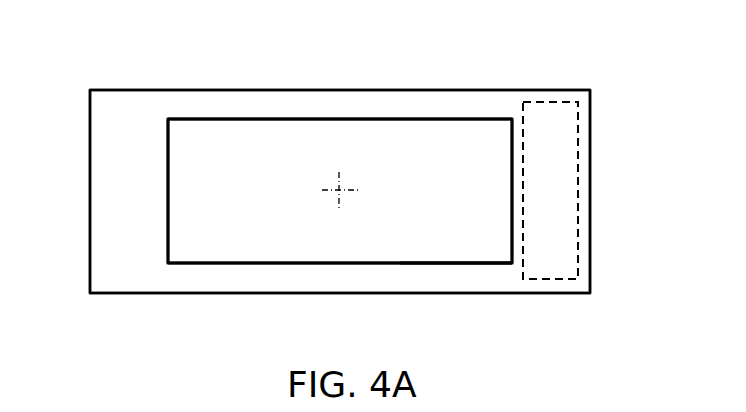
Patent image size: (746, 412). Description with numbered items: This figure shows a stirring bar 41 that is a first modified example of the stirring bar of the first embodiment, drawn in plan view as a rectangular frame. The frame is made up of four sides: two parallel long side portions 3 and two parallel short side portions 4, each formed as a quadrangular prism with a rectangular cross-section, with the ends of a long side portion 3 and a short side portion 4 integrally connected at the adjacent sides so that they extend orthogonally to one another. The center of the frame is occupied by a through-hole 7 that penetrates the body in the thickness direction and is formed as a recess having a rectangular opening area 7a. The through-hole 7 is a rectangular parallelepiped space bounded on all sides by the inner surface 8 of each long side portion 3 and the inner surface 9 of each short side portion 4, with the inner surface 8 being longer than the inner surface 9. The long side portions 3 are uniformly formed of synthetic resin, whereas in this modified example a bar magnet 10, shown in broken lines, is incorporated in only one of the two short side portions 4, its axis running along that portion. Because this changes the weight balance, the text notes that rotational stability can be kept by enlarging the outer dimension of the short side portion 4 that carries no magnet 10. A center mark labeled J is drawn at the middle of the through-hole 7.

The stirring bar 41 is at (407, 63).
The long side portion 3 is at (287, 110).
The short side portion 4 is at (115, 167).
The through-hole 7 is at (380, 243).
The opening area 7a is at (453, 248).
The inner surface of the long side portion 8 is at (287, 123).
The inner surface of the short side portion 9 is at (168, 188).
The magnet 10 is at (577, 233).
The center axis J is at (345, 185).